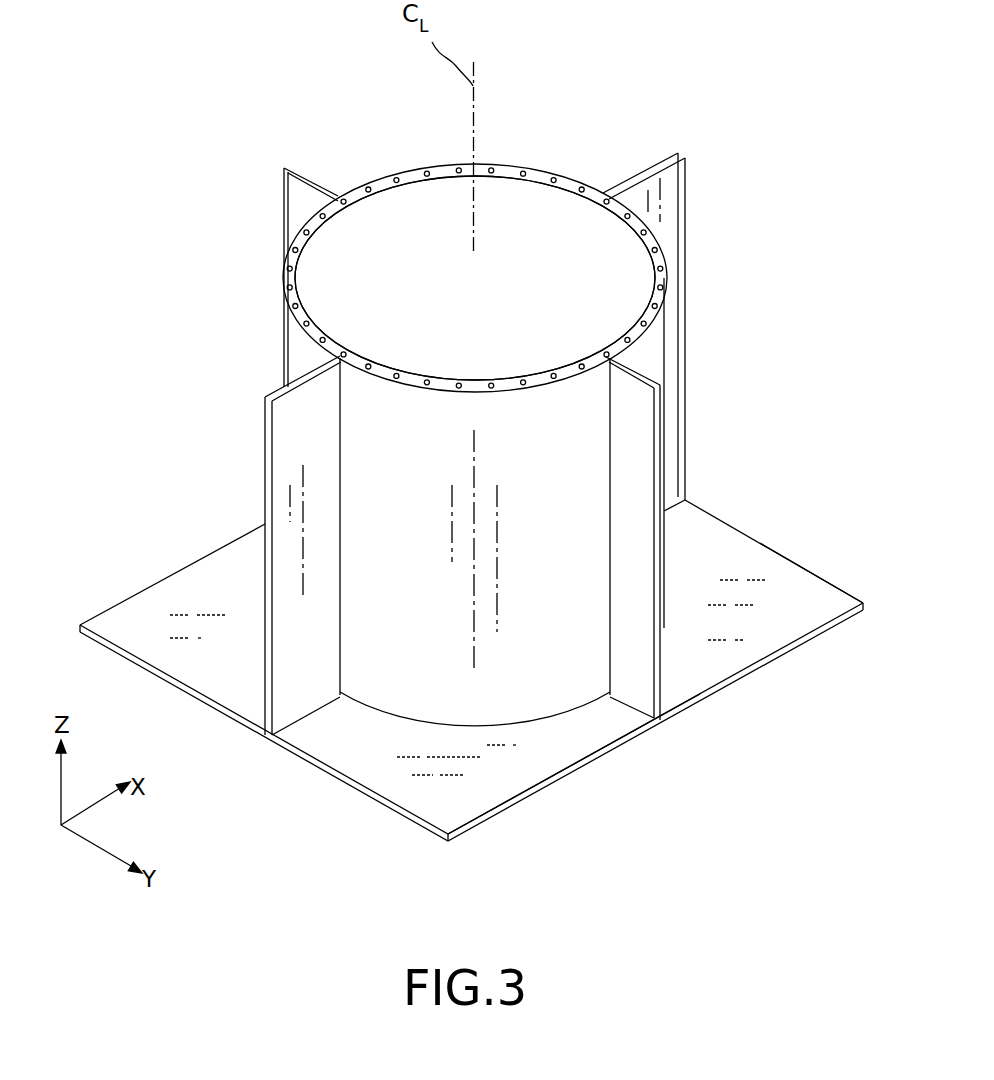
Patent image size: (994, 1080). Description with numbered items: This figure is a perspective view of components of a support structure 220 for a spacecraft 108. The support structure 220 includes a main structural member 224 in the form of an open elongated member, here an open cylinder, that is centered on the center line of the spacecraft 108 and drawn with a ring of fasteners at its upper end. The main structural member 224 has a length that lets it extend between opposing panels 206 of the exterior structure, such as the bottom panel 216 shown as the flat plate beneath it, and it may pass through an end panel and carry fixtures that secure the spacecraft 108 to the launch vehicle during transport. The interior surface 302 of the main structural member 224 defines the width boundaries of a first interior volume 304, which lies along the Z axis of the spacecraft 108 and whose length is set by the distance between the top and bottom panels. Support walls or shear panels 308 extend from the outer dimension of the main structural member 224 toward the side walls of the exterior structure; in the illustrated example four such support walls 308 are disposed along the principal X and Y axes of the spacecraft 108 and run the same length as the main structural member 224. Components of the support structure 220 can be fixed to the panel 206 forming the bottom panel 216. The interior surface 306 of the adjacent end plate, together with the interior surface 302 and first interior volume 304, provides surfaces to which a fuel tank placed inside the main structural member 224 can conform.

The spacecraft 108 is at (486, 465).
The support structure 220 is at (475, 248).
The interior surface 302 is at (540, 202).
The main structural member 224 is at (577, 188).
The first interior volume 304 is at (497, 304).
The support walls 308 is at (264, 453).
The panels 206 is at (486, 655).
The bottom panel 216 is at (827, 584).
The interior surface of end plate 306 is at (557, 766).